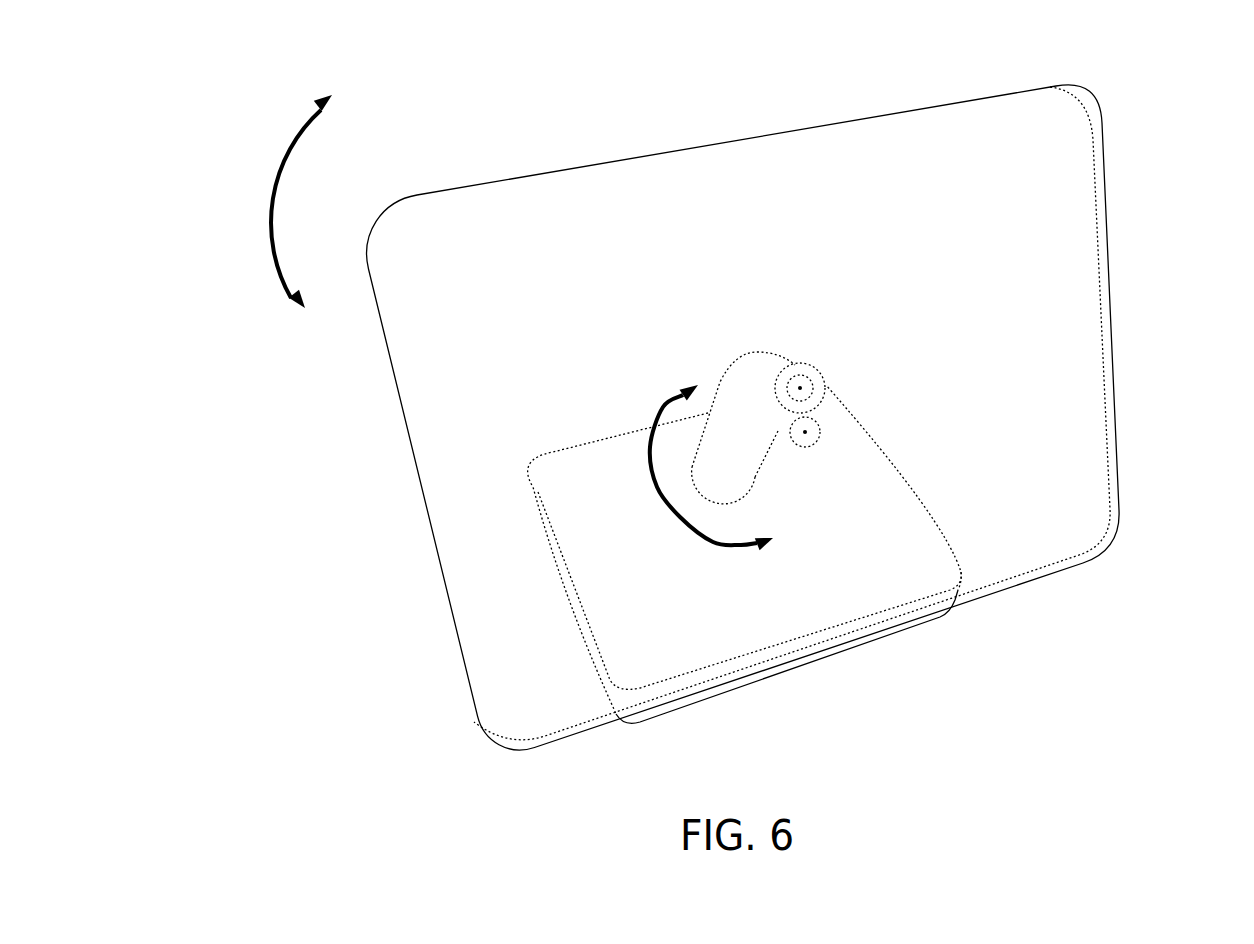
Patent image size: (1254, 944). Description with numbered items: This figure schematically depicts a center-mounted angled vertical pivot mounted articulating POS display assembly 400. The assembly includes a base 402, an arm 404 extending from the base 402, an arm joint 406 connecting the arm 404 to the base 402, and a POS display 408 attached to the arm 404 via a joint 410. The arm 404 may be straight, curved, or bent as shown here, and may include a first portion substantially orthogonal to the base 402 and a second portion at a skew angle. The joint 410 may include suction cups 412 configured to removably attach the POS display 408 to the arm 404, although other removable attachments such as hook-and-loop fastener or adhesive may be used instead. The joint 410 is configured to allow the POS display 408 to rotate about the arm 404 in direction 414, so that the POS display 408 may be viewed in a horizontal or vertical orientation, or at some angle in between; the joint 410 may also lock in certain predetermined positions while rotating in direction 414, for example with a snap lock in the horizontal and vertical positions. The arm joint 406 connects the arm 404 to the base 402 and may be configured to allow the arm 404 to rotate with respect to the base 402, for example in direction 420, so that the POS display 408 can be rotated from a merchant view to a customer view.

The articulating POS display assembly 400 is at (1147, 70).
The base 402 is at (928, 537).
The arm 404 is at (740, 386).
The arm joint 406 is at (772, 473).
The POS display 408 is at (798, 150).
The joint 410 is at (796, 346).
The suction cups 412 is at (806, 431).
The direction 414 is at (274, 204).
The direction 420 is at (655, 490).